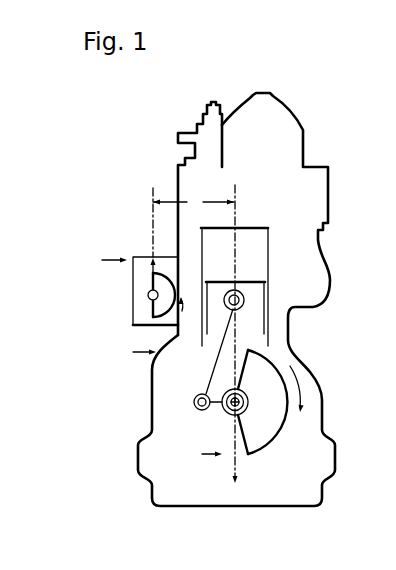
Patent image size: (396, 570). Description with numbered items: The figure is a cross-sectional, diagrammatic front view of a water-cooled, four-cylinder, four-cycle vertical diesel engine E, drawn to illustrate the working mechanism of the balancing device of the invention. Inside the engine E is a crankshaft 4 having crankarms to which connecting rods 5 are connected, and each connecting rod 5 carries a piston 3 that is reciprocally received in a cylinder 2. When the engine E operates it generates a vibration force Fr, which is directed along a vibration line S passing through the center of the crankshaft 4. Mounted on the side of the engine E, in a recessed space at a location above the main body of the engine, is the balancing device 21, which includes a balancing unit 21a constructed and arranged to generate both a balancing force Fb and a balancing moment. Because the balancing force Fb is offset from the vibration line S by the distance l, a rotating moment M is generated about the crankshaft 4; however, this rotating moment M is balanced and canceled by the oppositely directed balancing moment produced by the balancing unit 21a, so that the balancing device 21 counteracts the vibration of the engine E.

The diesel engine E is at (313, 160).
The vibration line S is at (240, 212).
The distance l is at (193, 222).
The cylinder 2 is at (268, 250).
The piston 3 is at (265, 282).
The crankshaft 4 is at (246, 399).
The connecting rod 5 is at (211, 369).
The balancing device 21 is at (133, 303).
The balancing unit 21a is at (138, 250).
The balancing force Fb is at (152, 270).
The vibration force Fr is at (235, 444).
The rotating moment M is at (301, 383).